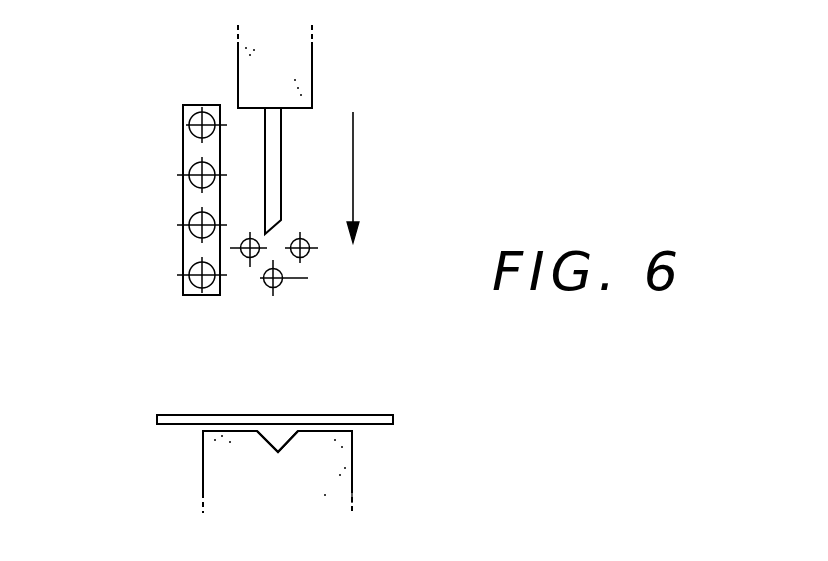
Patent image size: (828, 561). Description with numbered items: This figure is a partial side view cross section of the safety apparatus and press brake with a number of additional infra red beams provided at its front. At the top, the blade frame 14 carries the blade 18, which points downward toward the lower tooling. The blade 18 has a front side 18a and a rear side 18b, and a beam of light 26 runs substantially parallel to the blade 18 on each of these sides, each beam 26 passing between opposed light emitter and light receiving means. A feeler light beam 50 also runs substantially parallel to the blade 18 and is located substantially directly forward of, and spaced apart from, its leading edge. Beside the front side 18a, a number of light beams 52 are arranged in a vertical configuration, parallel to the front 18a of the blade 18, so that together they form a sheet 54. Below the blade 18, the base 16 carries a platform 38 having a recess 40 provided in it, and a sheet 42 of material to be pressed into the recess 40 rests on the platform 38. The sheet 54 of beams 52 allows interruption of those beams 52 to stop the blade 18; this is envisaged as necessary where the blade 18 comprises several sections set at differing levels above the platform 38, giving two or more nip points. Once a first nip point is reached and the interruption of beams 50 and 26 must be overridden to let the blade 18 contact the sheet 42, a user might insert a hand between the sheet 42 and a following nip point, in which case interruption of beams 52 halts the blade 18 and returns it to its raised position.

The blade frame 14 is at (313, 52).
The blade 18 is at (281, 147).
The front side of the blade 18a is at (115, 157).
The rear side of the blade 18b is at (432, 165).
The sheet of beams 54 is at (182, 148).
The light beams 52 is at (183, 237).
The beam of light 26 is at (307, 255).
The feeler light beam 50 is at (281, 284).
The sheet 42 is at (357, 414).
The platform 38 is at (327, 431).
The recess 40 is at (268, 443).
The base 16 is at (354, 498).